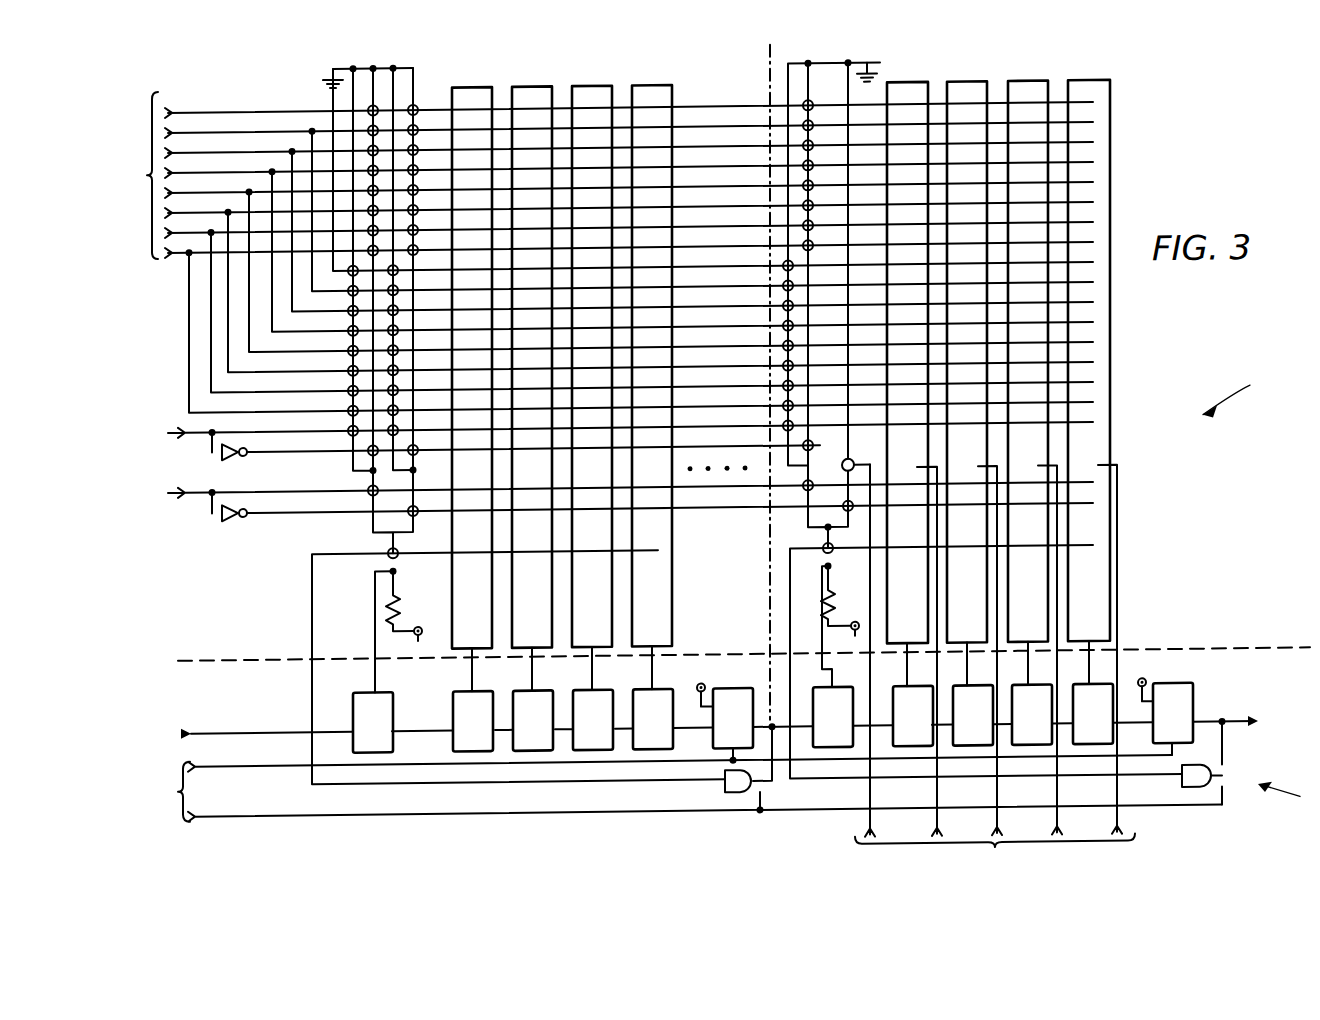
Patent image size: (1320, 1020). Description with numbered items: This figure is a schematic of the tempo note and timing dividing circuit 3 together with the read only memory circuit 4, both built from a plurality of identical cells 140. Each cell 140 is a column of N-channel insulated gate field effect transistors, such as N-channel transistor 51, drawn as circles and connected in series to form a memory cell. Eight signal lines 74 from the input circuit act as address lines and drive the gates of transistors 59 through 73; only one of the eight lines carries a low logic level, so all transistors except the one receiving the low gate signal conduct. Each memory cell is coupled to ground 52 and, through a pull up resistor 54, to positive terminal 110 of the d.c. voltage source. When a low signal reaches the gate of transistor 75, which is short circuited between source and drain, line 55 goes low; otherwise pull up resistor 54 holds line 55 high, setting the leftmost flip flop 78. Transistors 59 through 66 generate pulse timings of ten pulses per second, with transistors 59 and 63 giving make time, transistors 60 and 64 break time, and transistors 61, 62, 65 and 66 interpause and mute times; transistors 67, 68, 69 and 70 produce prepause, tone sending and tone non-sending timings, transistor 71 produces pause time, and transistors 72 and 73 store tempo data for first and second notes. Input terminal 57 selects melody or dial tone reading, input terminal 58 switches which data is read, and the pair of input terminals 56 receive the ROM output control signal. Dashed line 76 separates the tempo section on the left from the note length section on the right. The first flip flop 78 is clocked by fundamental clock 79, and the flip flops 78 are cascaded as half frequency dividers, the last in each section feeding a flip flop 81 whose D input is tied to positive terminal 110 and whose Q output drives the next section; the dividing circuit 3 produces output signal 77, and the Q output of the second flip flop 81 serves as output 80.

The tempo note and timing dividing circuit 3 is at (1284, 808).
The read only memory (ROM) circuit 4 is at (1228, 385).
The N-channel transistor 51 is at (413, 112).
The ground 52 is at (322, 79).
The pull up resistor 54 is at (397, 608).
The line 55 is at (375, 616).
The input terminals for ROM output control signal 56 is at (684, 785).
The input terminal 57 is at (615, 496).
The input terminal 58 is at (615, 435).
The N-channel transistor 59 is at (629, 376).
The N-channel transistor 60 is at (629, 121).
The N-channel transistor 61 is at (629, 141).
The N-channel transistor 62 is at (629, 161).
The N-channel transistor 63 is at (629, 181).
The N-channel transistor 64 is at (629, 201).
The N-channel transistor 65 is at (629, 299).
The N-channel transistor 66 is at (629, 319).
The N-channel transistor 67 is at (347, 276).
The N-channel transistor 68 is at (347, 296).
The N-channel transistor 69 is at (347, 316).
The N-channel transistor 70 is at (347, 336).
The N-channel transistor 71 is at (339, 356).
The N-channel transistor 72 is at (414, 197).
The N-channel transistor 73 is at (395, 333).
The signal lines 74 is at (139, 175).
The N-channel transistor 75 is at (340, 376).
The dashed line 76 is at (768, 78).
The output signal 77 is at (995, 668).
The flip flop 78 is at (1060, 697).
The fundamental CK 79 is at (246, 732).
The output 80 is at (1242, 732).
The flip flop 81 is at (1177, 695).
The positive terminal 110 is at (703, 678).
The cell 140 is at (1085, 91).